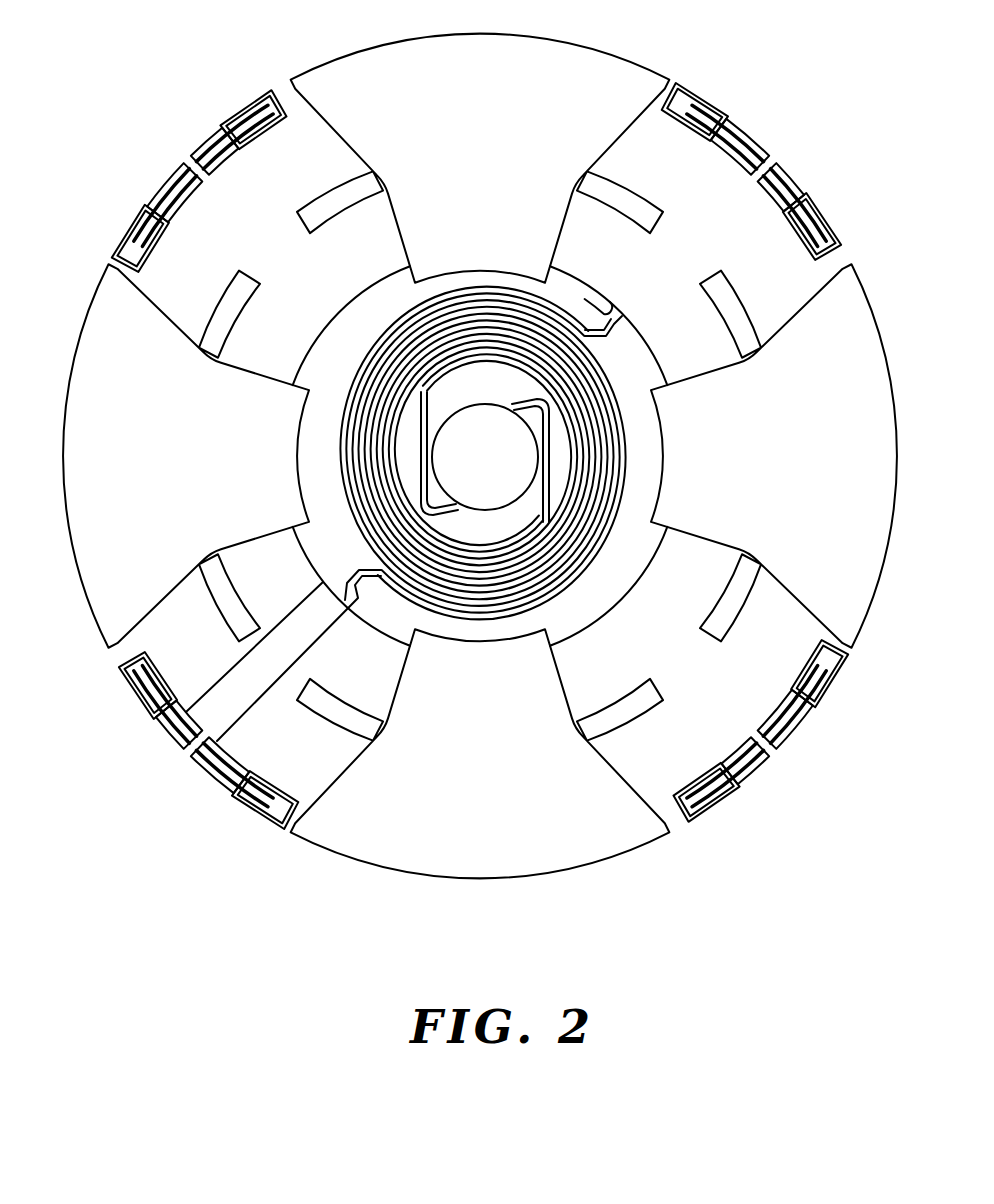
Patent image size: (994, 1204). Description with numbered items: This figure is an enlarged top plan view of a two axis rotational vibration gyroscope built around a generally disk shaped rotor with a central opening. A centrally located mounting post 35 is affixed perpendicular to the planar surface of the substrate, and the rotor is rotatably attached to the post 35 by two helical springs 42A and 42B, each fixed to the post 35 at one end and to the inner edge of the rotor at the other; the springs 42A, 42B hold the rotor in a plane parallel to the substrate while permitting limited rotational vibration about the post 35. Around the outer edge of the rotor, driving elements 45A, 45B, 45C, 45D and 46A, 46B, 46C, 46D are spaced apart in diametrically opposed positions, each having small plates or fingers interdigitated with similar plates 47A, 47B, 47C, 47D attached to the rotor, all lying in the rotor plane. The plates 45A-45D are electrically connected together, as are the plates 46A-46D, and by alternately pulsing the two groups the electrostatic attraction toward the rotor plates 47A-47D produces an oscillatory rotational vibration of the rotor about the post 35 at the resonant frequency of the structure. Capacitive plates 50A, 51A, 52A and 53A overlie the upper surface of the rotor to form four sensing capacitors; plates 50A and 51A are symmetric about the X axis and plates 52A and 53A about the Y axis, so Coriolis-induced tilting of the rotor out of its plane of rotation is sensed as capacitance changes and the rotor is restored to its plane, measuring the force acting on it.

The mounting post 35 is at (498, 467).
The helical spring 42A is at (608, 554).
The helical spring 42B is at (358, 348).
The driving element 45A is at (270, 100).
The driving element 45B is at (828, 228).
The driving element 45C is at (720, 800).
The driving element 45D is at (150, 706).
The driving element 46A is at (128, 222).
The driving element 46B is at (697, 95).
The driving element 46C is at (825, 705).
The driving element 46D is at (270, 822).
The plates attached to rotor 47A is at (202, 153).
The plates attached to rotor 47B is at (765, 156).
The plates attached to rotor 47C is at (780, 755).
The plates attached to rotor 47D is at (195, 758).
The capacitive plate 50A is at (858, 344).
The capacitive plate 51A is at (82, 340).
The capacitive plate 52A is at (488, 44).
The capacitive plate 53A is at (500, 877).